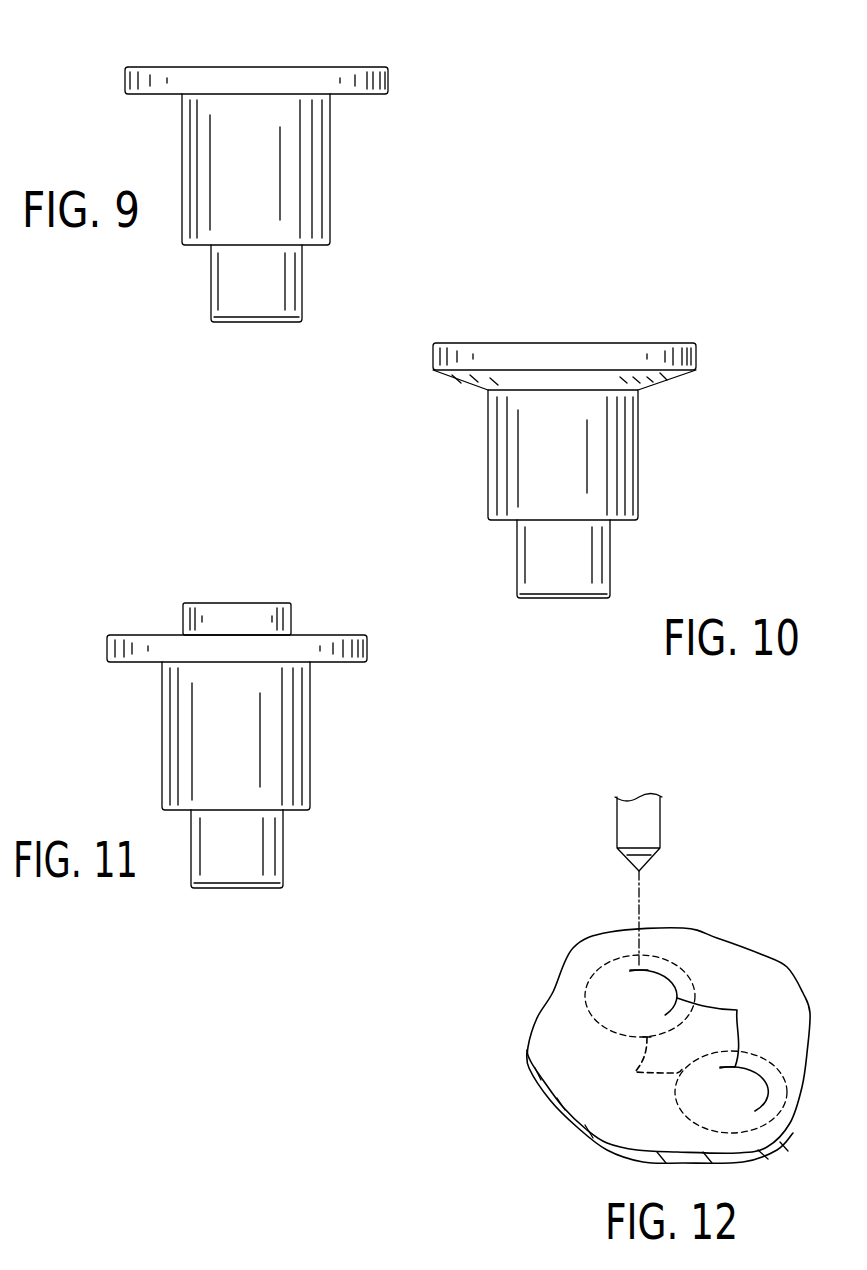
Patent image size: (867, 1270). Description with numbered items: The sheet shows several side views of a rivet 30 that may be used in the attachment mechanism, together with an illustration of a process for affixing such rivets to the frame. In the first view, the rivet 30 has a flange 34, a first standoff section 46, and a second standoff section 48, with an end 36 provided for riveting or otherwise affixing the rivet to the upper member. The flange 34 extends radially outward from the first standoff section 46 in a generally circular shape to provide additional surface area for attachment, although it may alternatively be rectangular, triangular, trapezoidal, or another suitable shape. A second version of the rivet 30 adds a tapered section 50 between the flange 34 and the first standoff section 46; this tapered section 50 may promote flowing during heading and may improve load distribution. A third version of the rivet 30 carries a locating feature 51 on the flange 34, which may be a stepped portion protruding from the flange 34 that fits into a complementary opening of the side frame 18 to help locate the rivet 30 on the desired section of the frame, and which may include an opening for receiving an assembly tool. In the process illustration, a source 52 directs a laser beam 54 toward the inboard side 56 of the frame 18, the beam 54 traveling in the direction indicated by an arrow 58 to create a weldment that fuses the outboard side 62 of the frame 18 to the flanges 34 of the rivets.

In FIG. 12, the side frame 18 is at (743, 967).
In FIG. 9, the rivet 30 is at (447, 112).
In FIG. 10, the rivet 30 is at (753, 397).
In FIG. 11, the rivet 30 is at (425, 687).
In FIG. 9, the flange 34 is at (318, 75).
In FIG. 10, the flange 34 is at (620, 352).
In FIG. 11, the flange 34 is at (298, 645).
In FIG. 12, the flange 34 is at (641, 1066).
In FIG. 9, the end 36 is at (245, 323).
In FIG. 10, the end 36 is at (562, 600).
In FIG. 11, the end 36 is at (227, 890).
In FIG. 9, the first standoff section 46 is at (293, 155).
In FIG. 10, the first standoff section 46 is at (600, 453).
In FIG. 11, the first standoff section 46 is at (273, 722).
In FIG. 9, the second standoff section 48 is at (277, 280).
In FIG. 10, the second standoff section 48 is at (578, 565).
In FIG. 11, the second standoff section 48 is at (253, 847).
In FIG. 10, the tapered section 50 is at (652, 385).
In FIG. 11, the locating feature 51 is at (230, 610).
In FIG. 12, the source 52 is at (647, 818).
In FIG. 12, the laser beam 54 is at (639, 918).
In FIG. 12, the inboard side 56 is at (570, 1075).
In FIG. 12, the arrow 58 is at (672, 907).
In FIG. 12, the outboard side 62 is at (565, 1165).